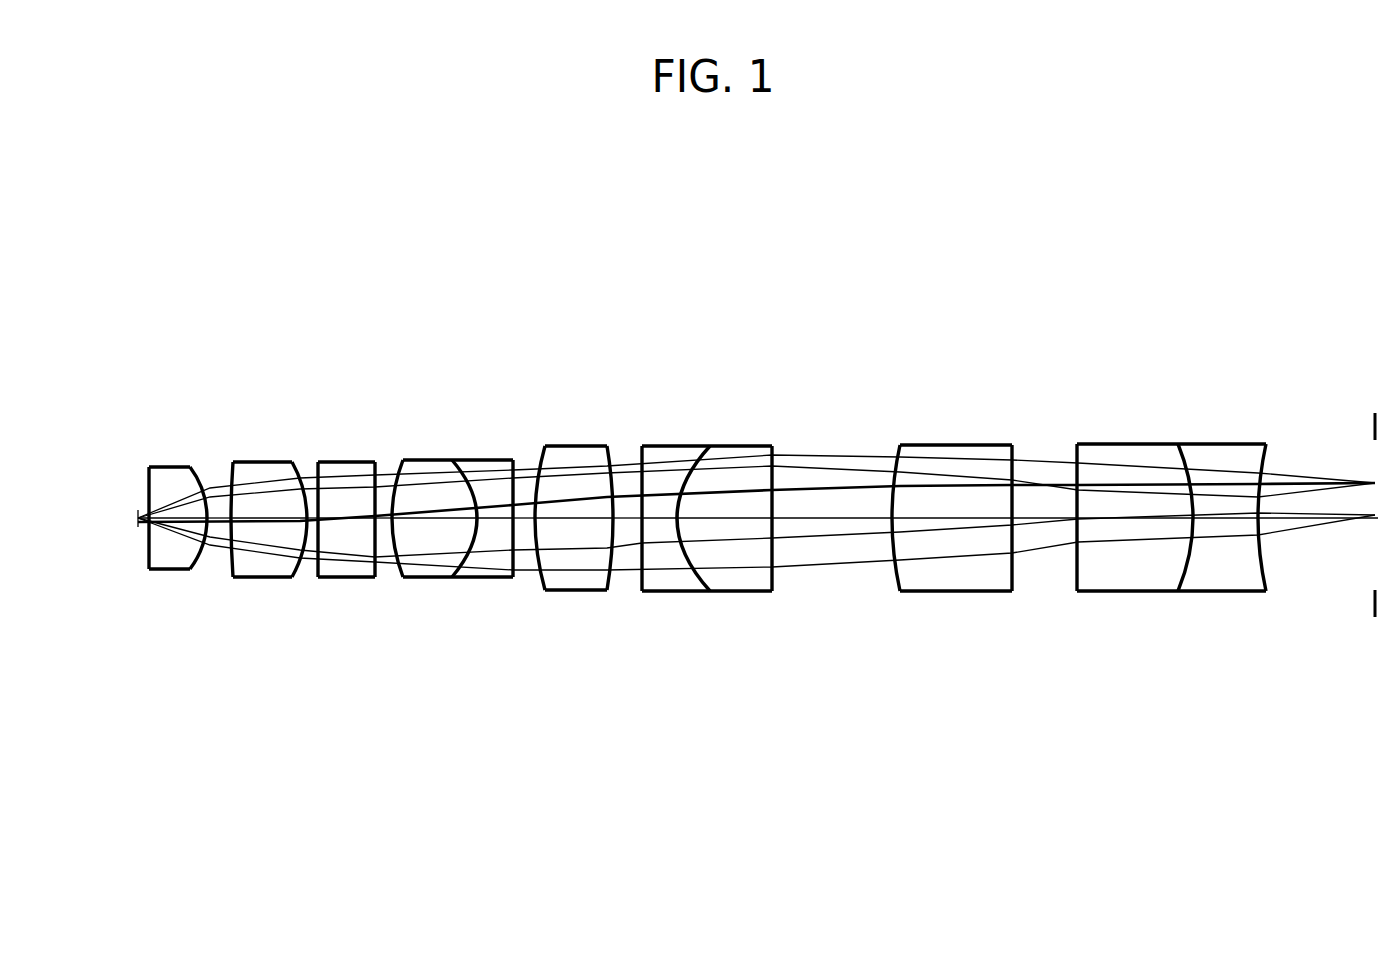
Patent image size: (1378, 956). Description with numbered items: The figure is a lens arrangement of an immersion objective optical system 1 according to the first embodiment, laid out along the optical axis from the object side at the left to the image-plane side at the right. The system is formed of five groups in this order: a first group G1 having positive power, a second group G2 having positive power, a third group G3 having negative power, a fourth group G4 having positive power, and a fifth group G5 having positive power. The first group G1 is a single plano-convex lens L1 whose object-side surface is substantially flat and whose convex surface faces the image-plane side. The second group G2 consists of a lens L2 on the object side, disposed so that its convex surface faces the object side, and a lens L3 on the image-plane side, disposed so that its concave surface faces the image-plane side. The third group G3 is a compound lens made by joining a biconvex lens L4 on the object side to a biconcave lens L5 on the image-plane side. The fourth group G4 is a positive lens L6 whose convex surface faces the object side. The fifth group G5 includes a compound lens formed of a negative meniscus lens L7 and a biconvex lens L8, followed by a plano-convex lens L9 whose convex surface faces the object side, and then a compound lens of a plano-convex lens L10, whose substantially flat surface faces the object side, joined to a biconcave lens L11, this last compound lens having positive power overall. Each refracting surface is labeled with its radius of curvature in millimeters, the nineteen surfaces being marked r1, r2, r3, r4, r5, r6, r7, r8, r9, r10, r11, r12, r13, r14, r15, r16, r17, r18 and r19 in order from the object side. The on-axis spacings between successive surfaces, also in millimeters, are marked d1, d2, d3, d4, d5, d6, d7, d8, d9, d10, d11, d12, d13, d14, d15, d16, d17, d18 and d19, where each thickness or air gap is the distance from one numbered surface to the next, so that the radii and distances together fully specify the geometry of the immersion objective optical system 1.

The immersion objective optical system 1 is at (1240, 174).
The first group G1 is at (215, 277).
The second group G2 is at (382, 277).
The third group G3 is at (517, 277).
The fourth group G4 is at (613, 277).
The fifth group G5 is at (1377, 275).
The plano-convex lens L1 is at (148, 467).
The lens L2 is at (278, 462).
The lens L3 is at (327, 462).
The biconvex lens L4 is at (420, 458).
The biconcave lens L5 is at (498, 458).
The positive lens L6 is at (600, 446).
The negative meniscus lens L7 is at (690, 446).
The biconvex lens L8 is at (753, 446).
The plano-convex lens L9 is at (985, 445).
The plano-convex lens L10 is at (1118, 445).
The biconcave lens L11 is at (1198, 444).
The radius of curvature r1 is at (148, 545).
The radius of curvature r2 is at (198, 568).
The radius of curvature r3 is at (233, 578).
The radius of curvature r4 is at (296, 572).
The radius of curvature r5 is at (318, 576).
The radius of curvature r6 is at (378, 570).
The radius of curvature r7 is at (404, 578).
The radius of curvature r8 is at (477, 477).
The radius of curvature r9 is at (513, 530).
The radius of curvature r10 is at (538, 462).
The radius of curvature r11 is at (611, 590).
The radius of curvature r12 is at (638, 476).
The radius of curvature r13 is at (699, 590).
The radius of curvature r14 is at (775, 591).
The radius of curvature r15 is at (894, 590).
The radius of curvature r16 is at (1014, 591).
The radius of curvature r17 is at (1072, 590).
The radius of curvature r18 is at (1186, 591).
The radius of curvature r19 is at (1270, 591).
The distance between surfaces d1 is at (157, 513).
The distance between surfaces d2 is at (220, 517).
The distance between surfaces d3 is at (260, 518).
The distance between surfaces d4 is at (308, 520).
The distance between surfaces d5 is at (337, 518).
The distance between surfaces d6 is at (380, 518).
The distance between surfaces d7 is at (440, 520).
The distance between surfaces d8 is at (493, 520).
The distance between surfaces d9 is at (562, 518).
The distance between surfaces d10 is at (565, 518).
The distance between surfaces d11 is at (650, 518).
The distance between surfaces d12 is at (657, 518).
The distance between surfaces d13 is at (745, 520).
The distance between surfaces d14 is at (828, 518).
The distance between surfaces d15 is at (953, 518).
The distance between surfaces d16 is at (1027, 518).
The distance between surfaces d17 is at (1157, 520).
The distance between surfaces d18 is at (1231, 518).
The distance between surfaces d19 is at (1316, 518).